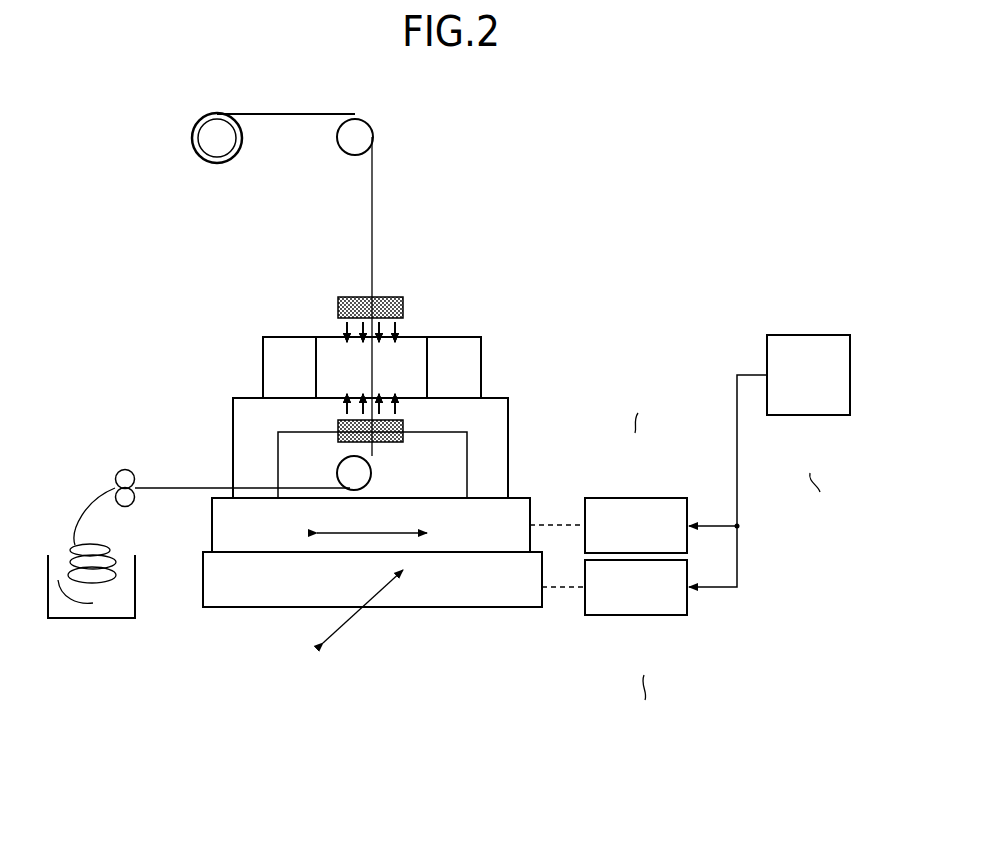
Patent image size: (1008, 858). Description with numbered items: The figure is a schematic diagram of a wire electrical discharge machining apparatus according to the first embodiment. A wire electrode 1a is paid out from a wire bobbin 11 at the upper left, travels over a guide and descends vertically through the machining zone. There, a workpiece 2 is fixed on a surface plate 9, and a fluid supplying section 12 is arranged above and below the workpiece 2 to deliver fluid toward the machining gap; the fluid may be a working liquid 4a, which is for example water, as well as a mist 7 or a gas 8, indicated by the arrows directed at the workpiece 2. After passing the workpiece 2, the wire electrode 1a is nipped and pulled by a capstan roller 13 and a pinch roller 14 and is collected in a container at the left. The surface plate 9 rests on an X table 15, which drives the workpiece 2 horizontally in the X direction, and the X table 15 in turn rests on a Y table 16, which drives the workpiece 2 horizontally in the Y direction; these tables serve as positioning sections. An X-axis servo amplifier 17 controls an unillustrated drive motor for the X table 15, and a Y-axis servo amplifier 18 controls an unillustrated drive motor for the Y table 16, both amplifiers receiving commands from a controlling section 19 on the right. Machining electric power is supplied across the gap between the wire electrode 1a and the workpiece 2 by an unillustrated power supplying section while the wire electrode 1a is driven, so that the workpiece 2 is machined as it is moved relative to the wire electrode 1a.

The wire electrode 1a is at (372, 200).
The workpiece 2 is at (476, 370).
The working liquid 4a is at (345, 328).
The mist 7 is at (388, 328).
The gas 8 is at (388, 328).
The surface plate 9 is at (510, 407).
The wire bobbin 11 is at (217, 112).
The fluid supplying section 12 is at (408, 300).
The capstan roller 13 is at (132, 503).
The pinch roller 14 is at (124, 469).
The X table 15 is at (212, 530).
The Y table 16 is at (203, 587).
The X-axis servo amplifier 17 is at (635, 500).
The Y-axis servo amplifier 18 is at (635, 615).
The controlling section 19 is at (808, 415).